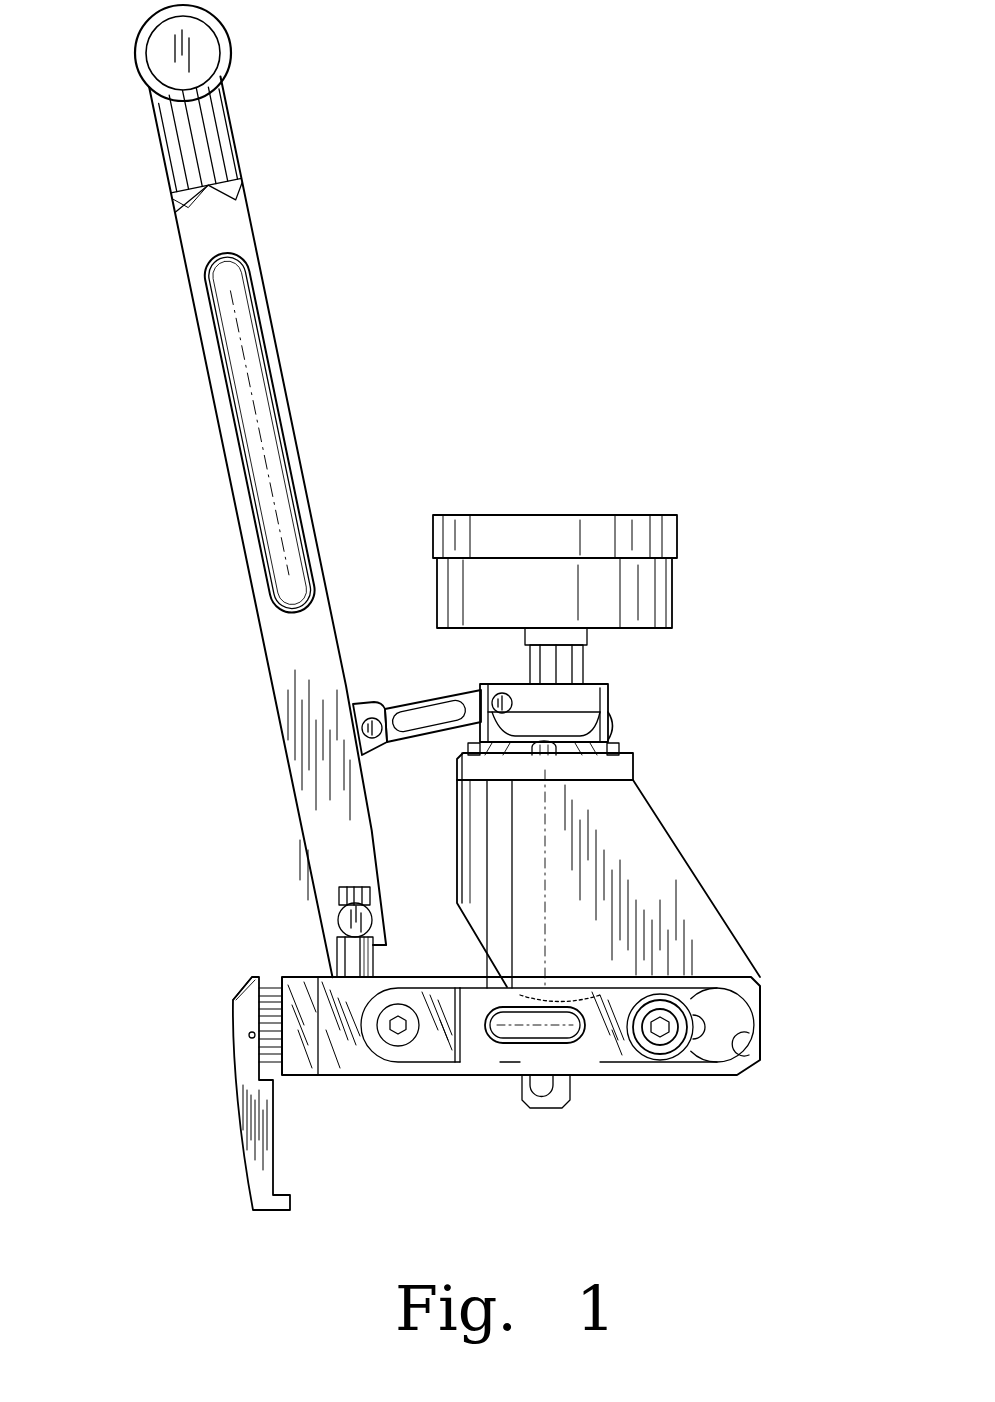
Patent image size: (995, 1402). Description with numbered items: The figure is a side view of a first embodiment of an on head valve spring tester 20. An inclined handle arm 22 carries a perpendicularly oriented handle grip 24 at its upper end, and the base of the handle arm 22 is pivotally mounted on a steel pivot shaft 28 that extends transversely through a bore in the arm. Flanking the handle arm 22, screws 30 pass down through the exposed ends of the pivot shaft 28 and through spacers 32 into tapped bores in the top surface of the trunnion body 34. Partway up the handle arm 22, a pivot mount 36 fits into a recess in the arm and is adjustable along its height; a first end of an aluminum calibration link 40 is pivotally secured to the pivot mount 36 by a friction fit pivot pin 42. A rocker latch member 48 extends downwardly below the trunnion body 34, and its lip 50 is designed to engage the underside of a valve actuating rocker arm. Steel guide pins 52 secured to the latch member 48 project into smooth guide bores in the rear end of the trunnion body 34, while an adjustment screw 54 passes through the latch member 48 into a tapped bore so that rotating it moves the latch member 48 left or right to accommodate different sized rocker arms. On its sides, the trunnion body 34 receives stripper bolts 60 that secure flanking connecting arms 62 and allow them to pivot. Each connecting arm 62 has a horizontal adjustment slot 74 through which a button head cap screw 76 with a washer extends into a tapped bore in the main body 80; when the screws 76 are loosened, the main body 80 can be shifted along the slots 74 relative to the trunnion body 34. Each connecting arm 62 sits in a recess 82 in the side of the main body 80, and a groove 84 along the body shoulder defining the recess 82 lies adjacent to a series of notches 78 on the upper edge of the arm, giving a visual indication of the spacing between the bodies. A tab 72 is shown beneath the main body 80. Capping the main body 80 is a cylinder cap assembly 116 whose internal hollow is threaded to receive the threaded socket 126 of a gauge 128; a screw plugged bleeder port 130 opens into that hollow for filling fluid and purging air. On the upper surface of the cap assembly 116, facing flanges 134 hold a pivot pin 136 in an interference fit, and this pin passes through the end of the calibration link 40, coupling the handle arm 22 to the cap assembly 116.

The on head valve spring tester 20 is at (780, 390).
The handle arm 22 is at (287, 383).
The handle grip 24 is at (230, 50).
The pivot shaft 28 is at (338, 922).
The screws 30 is at (346, 888).
The spacers 32 is at (336, 965).
The trunnion body 34 is at (336, 1070).
The pivot mount 36 is at (376, 719).
The calibration link 40 is at (412, 708).
The pivot pin 42 is at (379, 752).
The rocker latch member 48 is at (274, 1073).
The lip 50 is at (292, 1204).
The guide pins 52 is at (250, 985).
The adjustment screw 54 is at (265, 1022).
The stripper bolts 60 is at (402, 1044).
The connecting arms 62 is at (506, 1070).
The tab 72 is at (572, 1112).
The horizontal adjustment slot 74 is at (714, 1060).
The button head cap screws 76 is at (664, 1040).
The grooves or notches 78 is at (520, 995).
The main body 80 is at (698, 906).
The recess 82 is at (750, 1044).
The groove 84 is at (547, 985).
The cylinder cap assembly 116 is at (612, 870).
The threaded neck or socket 126 is at (578, 668).
The gauge 128 is at (678, 590).
The bleeder port 130 is at (613, 722).
The facing flanges 134 is at (562, 692).
The pivot pin 136 is at (500, 693).